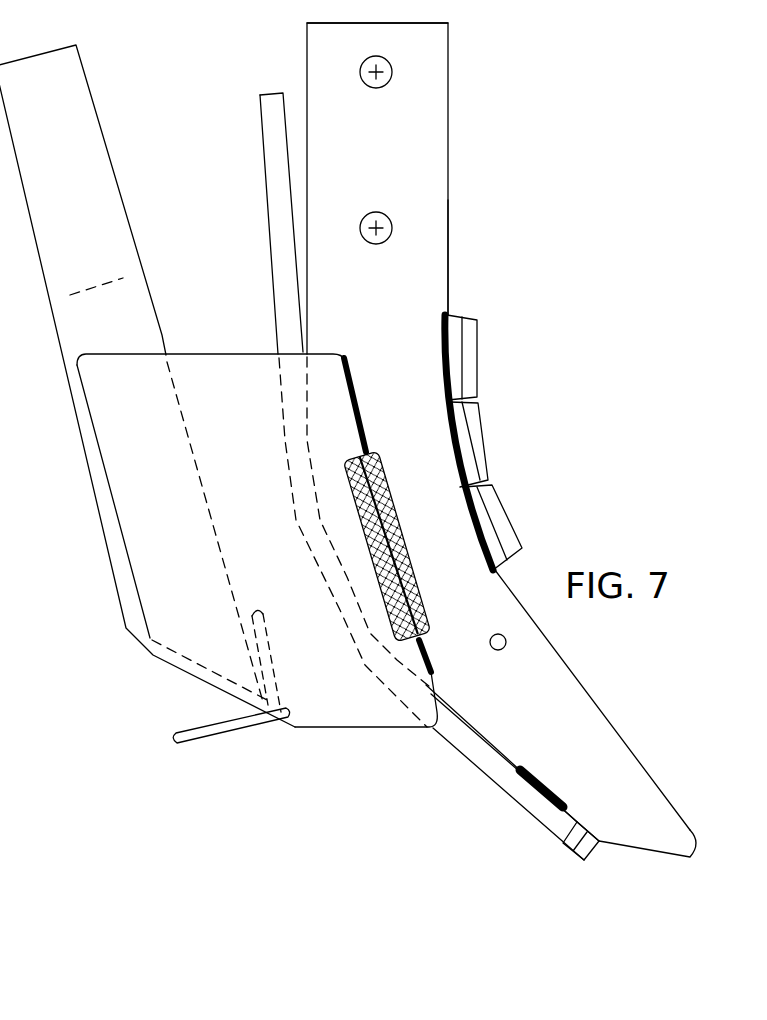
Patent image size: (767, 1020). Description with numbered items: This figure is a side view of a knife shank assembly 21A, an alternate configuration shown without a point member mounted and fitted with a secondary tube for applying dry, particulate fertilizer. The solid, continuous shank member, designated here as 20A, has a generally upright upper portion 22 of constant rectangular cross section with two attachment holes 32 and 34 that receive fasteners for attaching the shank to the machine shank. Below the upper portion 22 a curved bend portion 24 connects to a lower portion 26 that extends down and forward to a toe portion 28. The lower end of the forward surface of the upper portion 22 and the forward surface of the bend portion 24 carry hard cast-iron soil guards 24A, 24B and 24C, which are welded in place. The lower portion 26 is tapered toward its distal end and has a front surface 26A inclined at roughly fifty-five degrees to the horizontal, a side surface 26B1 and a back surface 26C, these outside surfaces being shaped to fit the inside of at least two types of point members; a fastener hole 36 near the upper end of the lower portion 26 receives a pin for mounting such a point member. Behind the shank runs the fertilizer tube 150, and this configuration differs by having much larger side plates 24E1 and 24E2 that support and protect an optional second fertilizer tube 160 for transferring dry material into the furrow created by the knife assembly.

The second fertilizer tube 160 is at (113, 247).
The fertilizer tube 150 is at (278, 263).
The upper portion 22 is at (394, 355).
The attachment hole 32 is at (392, 78).
The attachment hole 34 is at (390, 218).
The assembly 20A is at (490, 267).
The knife shank assembly 21A is at (472, 296).
The bend portion 24 is at (509, 442).
The soil guard 24A is at (473, 348).
The soil guard 24B is at (480, 420).
The soil guard 24C is at (493, 500).
The side plate 24E1 is at (250, 392).
The side plate 24E2 is at (250, 437).
The lower portion 26 is at (551, 715).
The front surface 26A is at (580, 675).
The side surface 26B1 is at (598, 744).
The back surface 26C is at (483, 737).
The toe portion 28 is at (690, 838).
The fastener hole 36 is at (512, 638).